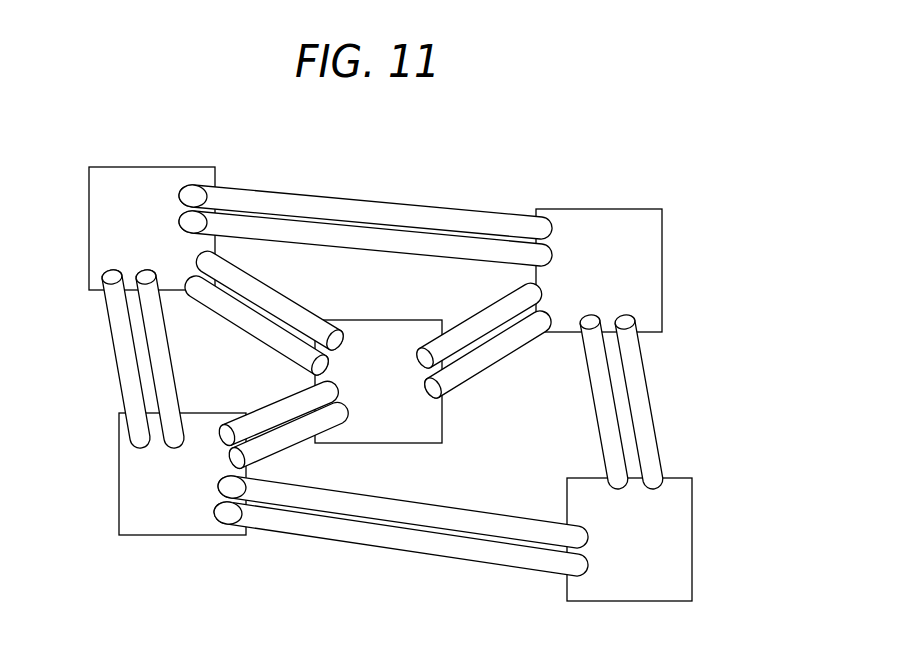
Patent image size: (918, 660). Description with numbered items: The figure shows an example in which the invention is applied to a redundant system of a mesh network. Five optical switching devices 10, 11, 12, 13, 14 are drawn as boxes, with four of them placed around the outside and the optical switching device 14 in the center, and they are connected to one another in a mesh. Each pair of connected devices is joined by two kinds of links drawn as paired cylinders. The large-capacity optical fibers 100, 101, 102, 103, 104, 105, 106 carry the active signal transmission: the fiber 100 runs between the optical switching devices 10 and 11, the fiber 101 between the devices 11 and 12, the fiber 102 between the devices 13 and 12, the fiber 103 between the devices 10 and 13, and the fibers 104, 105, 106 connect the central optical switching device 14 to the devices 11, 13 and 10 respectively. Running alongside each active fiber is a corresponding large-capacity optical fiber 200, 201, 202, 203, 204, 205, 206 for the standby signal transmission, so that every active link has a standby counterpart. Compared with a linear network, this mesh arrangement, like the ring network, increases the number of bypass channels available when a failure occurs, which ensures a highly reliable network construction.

The optical switching device 10 is at (141, 178).
The optical switching device 11 is at (589, 220).
The optical switching device 12 is at (685, 547).
The optical switching device 13 is at (143, 527).
The optical switching device 14 is at (432, 429).
The large-capacity optical fiber 100 is at (333, 203).
The large-capacity optical fiber 101 is at (643, 395).
The large-capacity optical fiber 102 is at (428, 512).
The large-capacity optical fiber 103 is at (172, 383).
The large-capacity optical fiber 104 is at (485, 313).
The large-capacity optical fiber 105 is at (297, 395).
The large-capacity optical fiber 106 is at (268, 291).
The large-capacity optical fiber 200 is at (375, 250).
The large-capacity optical fiber 201 is at (607, 457).
The large-capacity optical fiber 202 is at (405, 542).
The large-capacity optical fiber 203 is at (120, 357).
The large-capacity optical fiber 204 is at (488, 362).
The large-capacity optical fiber 205 is at (280, 450).
The large-capacity optical fiber 206 is at (243, 315).